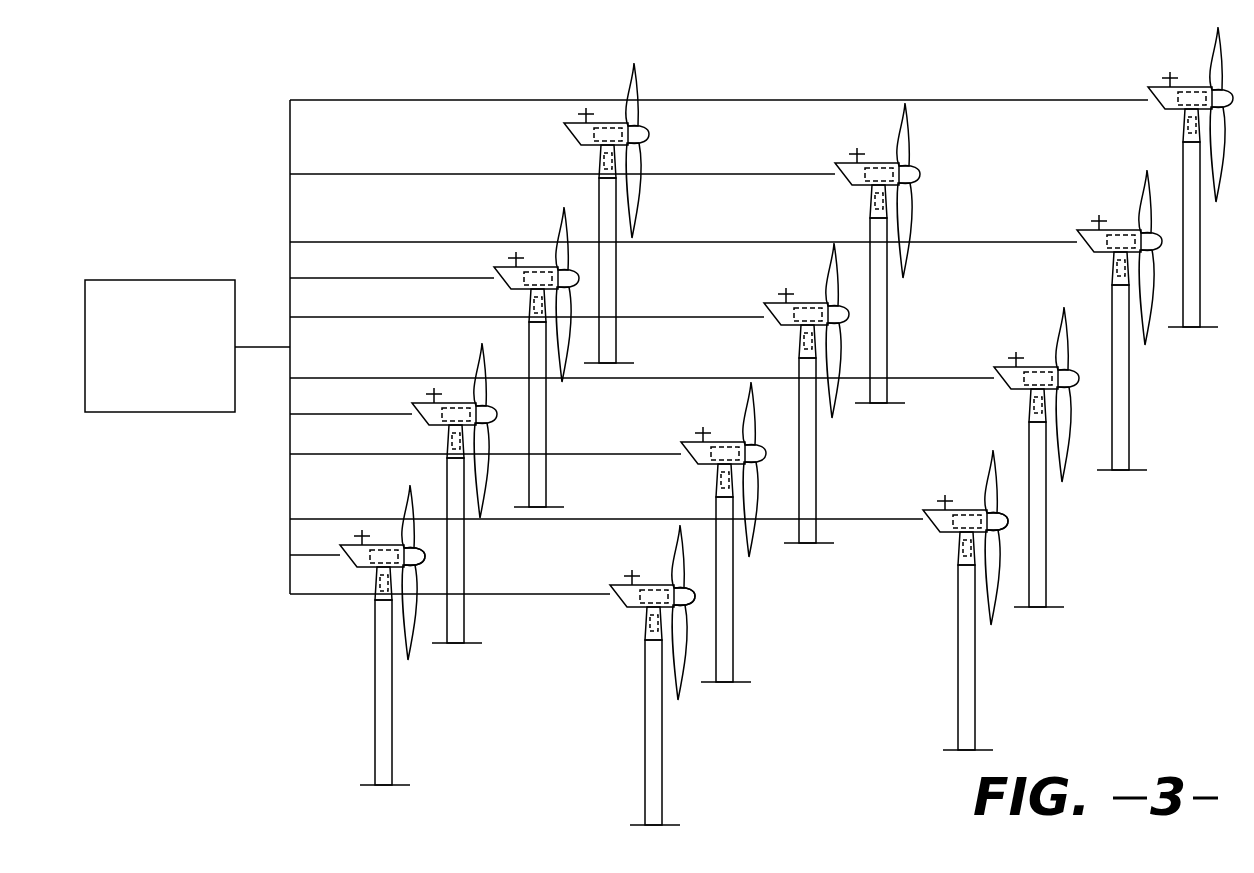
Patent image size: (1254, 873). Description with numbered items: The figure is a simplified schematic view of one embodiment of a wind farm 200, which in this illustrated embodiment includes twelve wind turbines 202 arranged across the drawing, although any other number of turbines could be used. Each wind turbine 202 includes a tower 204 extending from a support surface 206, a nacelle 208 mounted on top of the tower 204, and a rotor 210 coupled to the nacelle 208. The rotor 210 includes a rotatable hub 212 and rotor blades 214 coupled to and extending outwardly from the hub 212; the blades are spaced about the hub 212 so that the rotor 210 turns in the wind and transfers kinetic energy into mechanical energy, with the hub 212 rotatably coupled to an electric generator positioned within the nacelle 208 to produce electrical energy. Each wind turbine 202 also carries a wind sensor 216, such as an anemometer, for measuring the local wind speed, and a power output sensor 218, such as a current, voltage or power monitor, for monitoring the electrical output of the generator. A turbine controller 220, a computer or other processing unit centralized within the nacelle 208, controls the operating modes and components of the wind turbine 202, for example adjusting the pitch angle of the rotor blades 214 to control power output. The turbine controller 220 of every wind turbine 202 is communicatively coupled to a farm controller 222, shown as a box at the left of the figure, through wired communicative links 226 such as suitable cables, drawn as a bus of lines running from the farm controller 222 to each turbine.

The wind farm 200 is at (659, 426).
The wind turbine 202 is at (678, 615).
The tower 204 is at (383, 680).
The support surface 206 is at (370, 783).
The nacelle 208 is at (356, 570).
The rotor 210 is at (434, 561).
The rotatable hub 212 is at (433, 556).
The rotor blade 214 is at (404, 512).
The wind sensor 216 is at (356, 534).
The power output sensor 218 is at (378, 588).
The turbine controller 220 is at (385, 548).
The farm controller 222 is at (138, 358).
The communicative link 226 is at (430, 179).